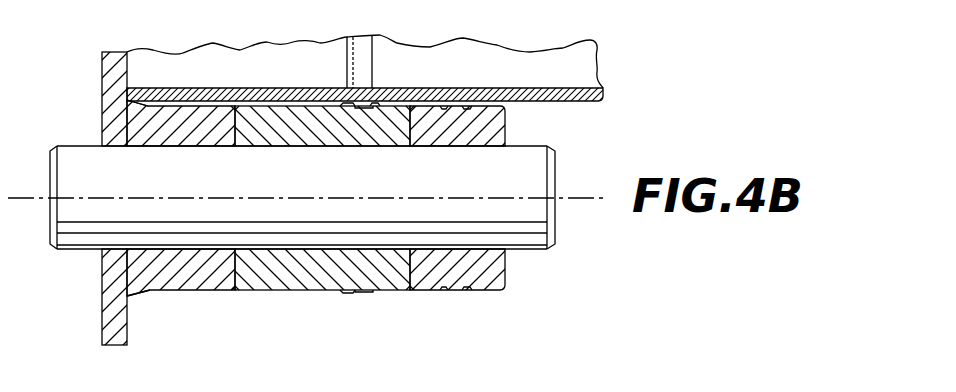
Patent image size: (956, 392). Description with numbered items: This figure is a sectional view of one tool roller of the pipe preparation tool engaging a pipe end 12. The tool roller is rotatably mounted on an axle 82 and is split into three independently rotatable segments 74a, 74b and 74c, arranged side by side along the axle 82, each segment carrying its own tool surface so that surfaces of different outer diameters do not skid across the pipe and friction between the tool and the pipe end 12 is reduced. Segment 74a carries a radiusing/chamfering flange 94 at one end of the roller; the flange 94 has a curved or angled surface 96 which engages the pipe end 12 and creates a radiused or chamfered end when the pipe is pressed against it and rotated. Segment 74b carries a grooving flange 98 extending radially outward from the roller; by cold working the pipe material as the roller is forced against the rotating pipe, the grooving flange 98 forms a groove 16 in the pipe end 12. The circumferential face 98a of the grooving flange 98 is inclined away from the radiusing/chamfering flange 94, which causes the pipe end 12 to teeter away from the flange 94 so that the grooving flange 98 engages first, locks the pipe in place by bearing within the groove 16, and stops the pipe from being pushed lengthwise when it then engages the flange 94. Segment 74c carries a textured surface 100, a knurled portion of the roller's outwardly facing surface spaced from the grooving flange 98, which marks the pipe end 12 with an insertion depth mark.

The pipe end 12 is at (581, 48).
The groove 16 is at (362, 57).
The tool roller segment 74a is at (175, 283).
The tool roller segment 74b is at (257, 281).
The tool roller segment 74c is at (487, 283).
The axle 82 is at (530, 236).
The radiusing/chamfering flange 94 is at (118, 346).
The curved or angled surface 96 is at (140, 295).
The grooving flange 98 is at (364, 293).
The circumferential face 98a is at (362, 294).
The textured surface 100 is at (457, 296).